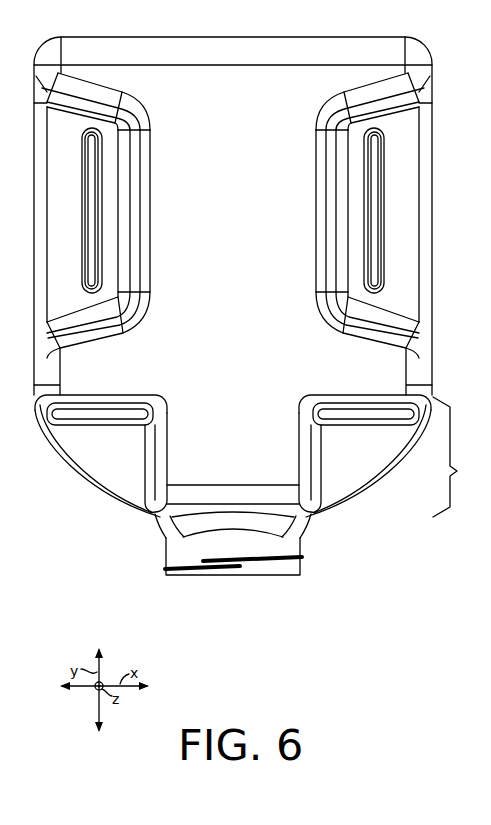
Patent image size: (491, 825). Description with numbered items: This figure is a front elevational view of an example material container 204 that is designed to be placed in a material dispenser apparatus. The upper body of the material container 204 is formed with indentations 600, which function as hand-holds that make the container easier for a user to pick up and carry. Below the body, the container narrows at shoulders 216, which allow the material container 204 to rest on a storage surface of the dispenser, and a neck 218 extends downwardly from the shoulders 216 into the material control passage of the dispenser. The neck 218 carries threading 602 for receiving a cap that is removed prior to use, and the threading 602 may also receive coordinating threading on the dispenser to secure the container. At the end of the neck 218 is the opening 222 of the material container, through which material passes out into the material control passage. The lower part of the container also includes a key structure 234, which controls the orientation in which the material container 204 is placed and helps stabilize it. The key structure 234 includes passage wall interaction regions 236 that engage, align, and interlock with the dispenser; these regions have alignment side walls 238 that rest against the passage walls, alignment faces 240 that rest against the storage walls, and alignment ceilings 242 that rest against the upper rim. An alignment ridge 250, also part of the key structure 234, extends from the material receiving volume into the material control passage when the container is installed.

The indentations 600 is at (146, 176).
The material container 204 is at (215, 232).
The passage wall interaction regions 236 is at (143, 388).
The alignment ceilings 242 is at (127, 422).
The alignment side walls 238 is at (147, 459).
The alignment faces 240 is at (337, 468).
The alignment ridge 250 is at (216, 458).
The shoulders 216 is at (111, 498).
The neck 218 is at (214, 553).
The threading 602 is at (303, 560).
The opening 222 is at (214, 582).
The key structure 234 is at (460, 457).